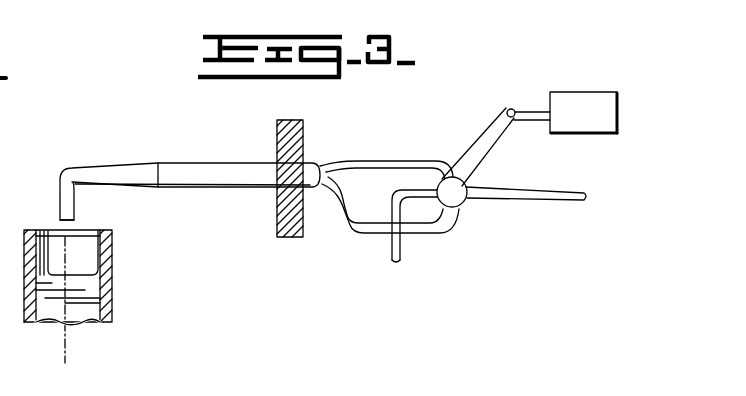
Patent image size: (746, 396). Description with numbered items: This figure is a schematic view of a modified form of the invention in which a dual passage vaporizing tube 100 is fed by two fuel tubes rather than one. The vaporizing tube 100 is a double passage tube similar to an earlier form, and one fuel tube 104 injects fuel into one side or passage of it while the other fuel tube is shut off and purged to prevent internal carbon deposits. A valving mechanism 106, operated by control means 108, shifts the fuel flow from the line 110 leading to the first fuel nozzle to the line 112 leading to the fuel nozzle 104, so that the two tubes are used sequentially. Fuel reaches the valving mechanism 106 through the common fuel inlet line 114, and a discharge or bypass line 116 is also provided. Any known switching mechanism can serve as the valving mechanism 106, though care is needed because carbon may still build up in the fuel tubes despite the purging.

The vaporizing tube 100 is at (114, 277).
The fuel tube 104 is at (188, 163).
The valving mechanism 106 is at (462, 203).
The control means 108 is at (537, 110).
The line 110 is at (370, 234).
The line 112 is at (378, 160).
The common fuel inlet line 114 is at (533, 188).
The discharge or bypass line 116 is at (402, 250).